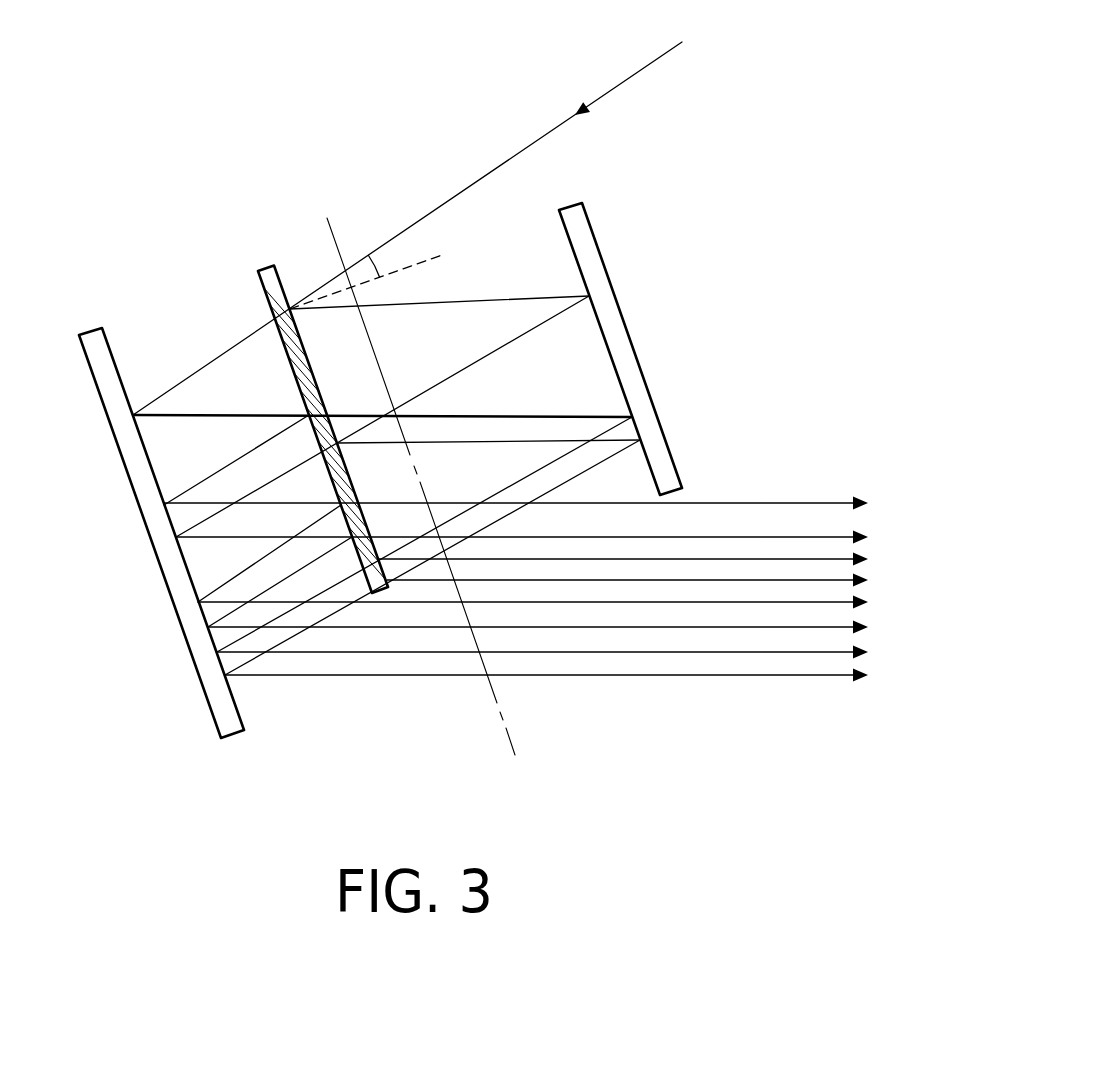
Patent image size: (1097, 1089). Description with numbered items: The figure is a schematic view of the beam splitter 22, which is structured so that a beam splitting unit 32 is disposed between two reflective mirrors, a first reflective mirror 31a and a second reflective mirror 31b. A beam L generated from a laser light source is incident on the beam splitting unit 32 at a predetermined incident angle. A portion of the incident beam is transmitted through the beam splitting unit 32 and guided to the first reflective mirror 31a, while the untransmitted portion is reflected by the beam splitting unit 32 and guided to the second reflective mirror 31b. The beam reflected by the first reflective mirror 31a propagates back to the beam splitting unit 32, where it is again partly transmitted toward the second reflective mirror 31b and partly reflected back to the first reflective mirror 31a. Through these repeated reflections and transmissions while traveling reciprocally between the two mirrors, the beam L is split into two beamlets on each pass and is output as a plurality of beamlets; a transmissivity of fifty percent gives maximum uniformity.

The beam splitter 22 is at (697, 145).
The first reflective mirror 31a is at (93, 334).
The second reflective mirror 31b is at (582, 230).
The beam splitting unit 32 is at (267, 278).
The beam L is at (704, 36).